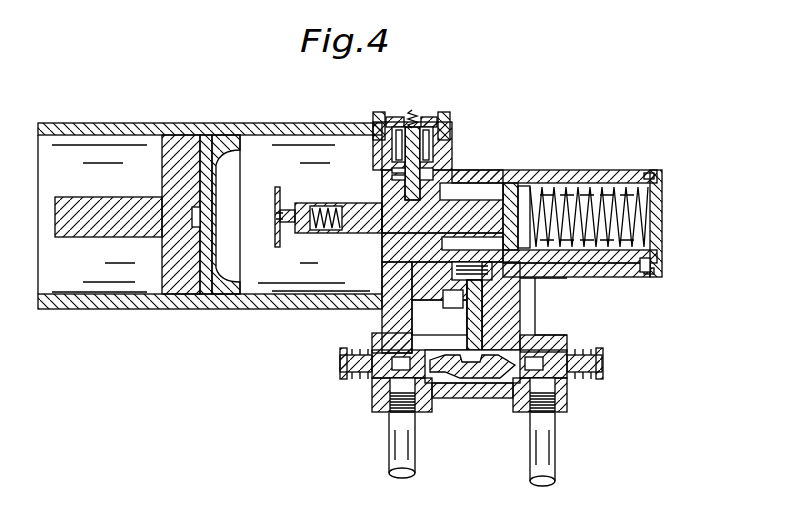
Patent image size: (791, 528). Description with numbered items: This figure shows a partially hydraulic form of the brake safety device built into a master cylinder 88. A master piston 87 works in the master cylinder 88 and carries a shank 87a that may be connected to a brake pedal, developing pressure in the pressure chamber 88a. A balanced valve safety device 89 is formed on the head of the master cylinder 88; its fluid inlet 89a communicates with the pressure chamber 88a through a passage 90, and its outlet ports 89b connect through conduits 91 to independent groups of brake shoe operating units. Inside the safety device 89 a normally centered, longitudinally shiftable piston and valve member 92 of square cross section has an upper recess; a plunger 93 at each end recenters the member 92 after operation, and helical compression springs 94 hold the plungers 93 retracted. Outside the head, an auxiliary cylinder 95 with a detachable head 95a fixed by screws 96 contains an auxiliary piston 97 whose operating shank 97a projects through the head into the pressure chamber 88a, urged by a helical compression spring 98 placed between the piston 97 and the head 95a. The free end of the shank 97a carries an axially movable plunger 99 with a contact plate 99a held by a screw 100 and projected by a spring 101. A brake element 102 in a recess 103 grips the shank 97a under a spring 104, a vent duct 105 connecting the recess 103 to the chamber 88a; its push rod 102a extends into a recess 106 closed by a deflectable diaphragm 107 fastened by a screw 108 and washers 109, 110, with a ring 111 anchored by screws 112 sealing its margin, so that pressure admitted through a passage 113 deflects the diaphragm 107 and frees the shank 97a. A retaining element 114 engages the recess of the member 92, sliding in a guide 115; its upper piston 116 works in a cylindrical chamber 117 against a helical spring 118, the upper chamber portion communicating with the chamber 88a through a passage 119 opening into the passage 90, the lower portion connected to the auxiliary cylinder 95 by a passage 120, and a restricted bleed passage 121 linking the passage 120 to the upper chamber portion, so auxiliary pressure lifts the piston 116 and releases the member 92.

The master piston 87 is at (162, 252).
The shank 87a is at (112, 201).
The master cylinder 88 is at (177, 124).
The pressure chamber 88a is at (290, 276).
The balanced valve safety device 89 is at (378, 341).
The fluid inlet 89a is at (413, 321).
The outlet ports 89b is at (562, 390).
The passage 90 is at (388, 290).
The conduits 91 is at (530, 455).
The piston and valve member 92 is at (470, 374).
The plunger 93 is at (605, 366).
The helical compression springs 94 is at (578, 360).
The auxiliary cylinder 95 is at (580, 172).
The detachable head 95a is at (662, 212).
The screws 96 is at (664, 228).
The auxiliary piston 97 is at (510, 190).
The operating shank 97a is at (372, 230).
The helical compression spring 98 is at (615, 192).
The plunger 99 is at (291, 211).
The contact plate 99a is at (277, 205).
The screw 100 is at (282, 219).
The helical compression spring 101 is at (335, 232).
The brake element 102 is at (500, 192).
The push rod 102a is at (433, 157).
The recess 103 is at (433, 175).
The helical compression spring 104 is at (392, 178).
The vent duct 105 is at (392, 171).
The recess 106 is at (433, 145).
The deflectable diaphragm 107 is at (396, 118).
The screw 108 is at (413, 118).
The washer 109 is at (430, 118).
The washer 110 is at (392, 140).
The ring 111 is at (373, 123).
The screws 112 is at (449, 122).
The passage 113 is at (397, 150).
The retaining element 114 is at (537, 330).
The guide 115 is at (470, 320).
The piston 116 is at (522, 303).
The cylindrical chamber 117 is at (450, 296).
The helical spring 118 is at (500, 245).
The passage 119 is at (452, 272).
The passage 120 is at (612, 268).
The restricted bleed passage 121 is at (536, 291).